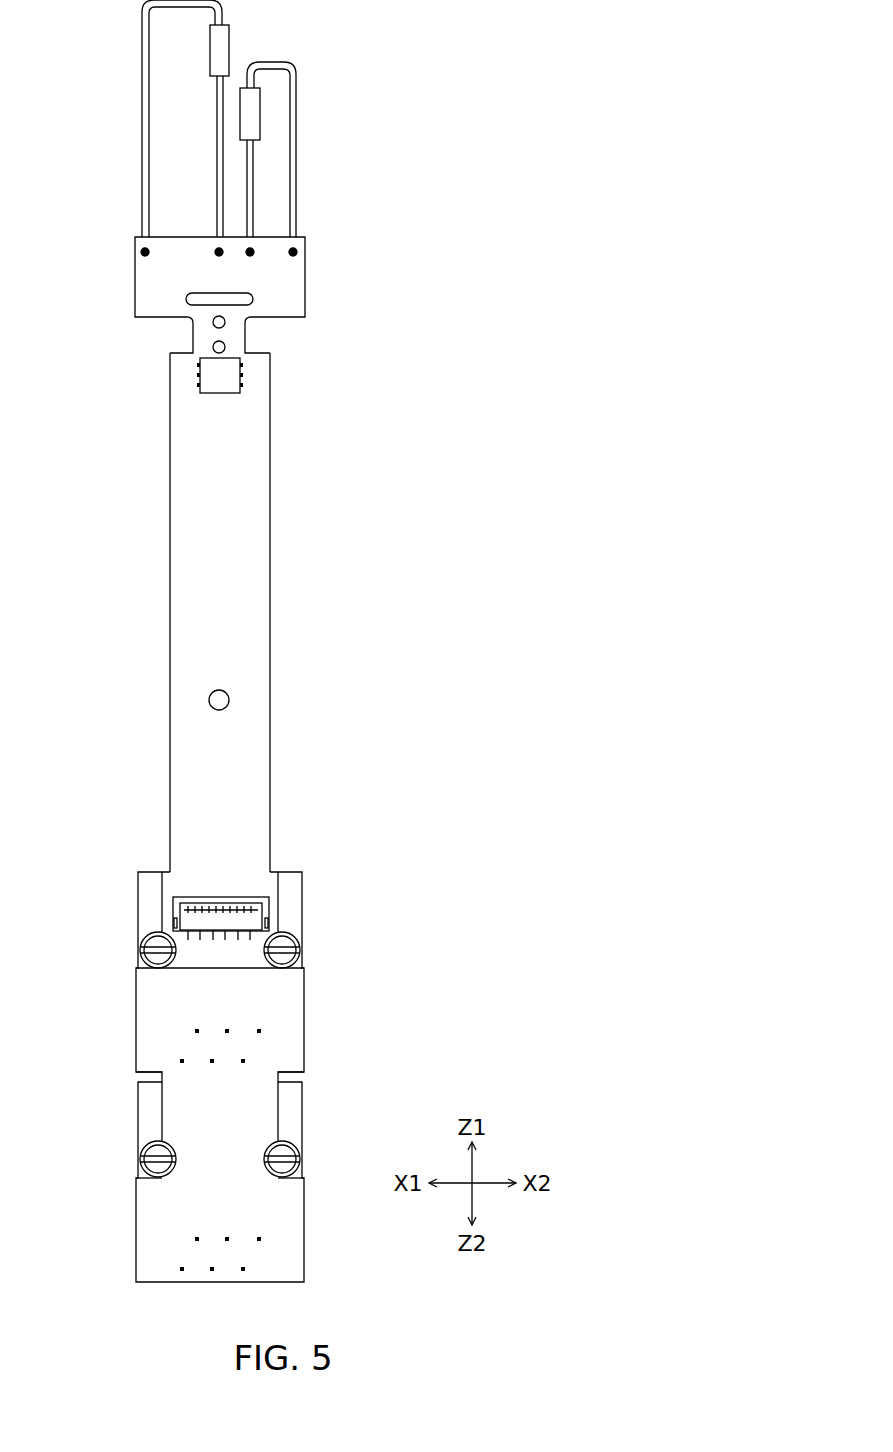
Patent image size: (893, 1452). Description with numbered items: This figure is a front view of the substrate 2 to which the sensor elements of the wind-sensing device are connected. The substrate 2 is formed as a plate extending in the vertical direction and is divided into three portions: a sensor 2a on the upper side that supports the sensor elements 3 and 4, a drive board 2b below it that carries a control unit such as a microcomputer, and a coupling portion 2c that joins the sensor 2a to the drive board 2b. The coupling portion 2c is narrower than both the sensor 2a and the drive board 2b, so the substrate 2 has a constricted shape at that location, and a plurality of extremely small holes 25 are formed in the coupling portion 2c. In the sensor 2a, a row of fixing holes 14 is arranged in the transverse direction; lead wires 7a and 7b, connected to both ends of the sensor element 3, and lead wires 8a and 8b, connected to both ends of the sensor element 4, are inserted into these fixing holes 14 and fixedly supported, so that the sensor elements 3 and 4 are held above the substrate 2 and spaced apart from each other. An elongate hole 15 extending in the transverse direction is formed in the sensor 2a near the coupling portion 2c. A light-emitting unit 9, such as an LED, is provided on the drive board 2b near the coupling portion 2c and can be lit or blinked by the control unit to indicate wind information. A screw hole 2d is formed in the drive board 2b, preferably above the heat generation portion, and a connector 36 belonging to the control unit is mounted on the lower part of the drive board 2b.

The substrate 2 is at (318, 463).
The sensor 2a is at (143, 282).
The drive board 2b is at (175, 798).
The coupling portion 2c is at (197, 337).
The screw hole 2d is at (230, 700).
The sensor element 3 is at (223, 37).
The sensor element 4 is at (255, 108).
The lead wire 7a is at (217, 100).
The lead wire 7b is at (147, 52).
The lead wire 8a is at (250, 175).
The lead wire 8b is at (293, 133).
The light-emitting unit 9 is at (197, 380).
The fixing holes 14 is at (218, 238).
The elongate hole 15 is at (240, 300).
The extremely small holes 25 is at (208, 322).
The connector 36 is at (238, 897).